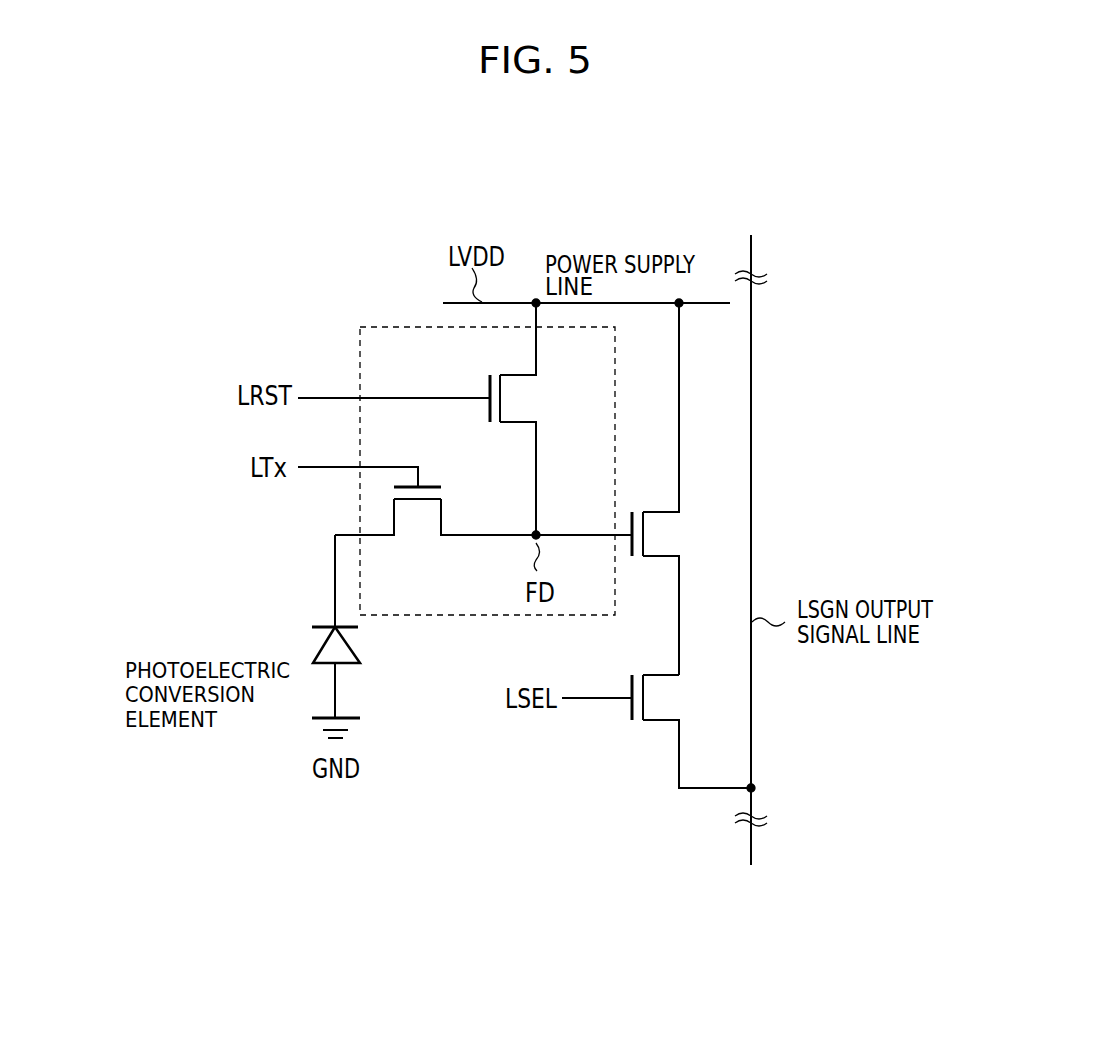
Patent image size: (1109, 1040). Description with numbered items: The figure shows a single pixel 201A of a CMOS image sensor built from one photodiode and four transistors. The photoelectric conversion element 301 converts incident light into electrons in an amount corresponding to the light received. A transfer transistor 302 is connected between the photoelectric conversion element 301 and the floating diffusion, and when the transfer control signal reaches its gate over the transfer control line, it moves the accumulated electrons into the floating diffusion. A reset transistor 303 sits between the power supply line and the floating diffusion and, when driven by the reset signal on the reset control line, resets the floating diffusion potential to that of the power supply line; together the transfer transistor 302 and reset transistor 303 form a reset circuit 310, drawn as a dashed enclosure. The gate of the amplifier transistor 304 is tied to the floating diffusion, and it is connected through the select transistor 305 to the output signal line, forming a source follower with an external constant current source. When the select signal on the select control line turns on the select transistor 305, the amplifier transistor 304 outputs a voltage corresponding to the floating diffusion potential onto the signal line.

The pixel 201A is at (398, 185).
The photoelectric conversion element 301 is at (322, 641).
The transfer transistor 302 is at (417, 520).
The reset transistor 303 is at (517, 396).
The amplifier transistor 304 is at (653, 538).
The select transistor 305 is at (655, 700).
The reset circuit 310 is at (382, 326).